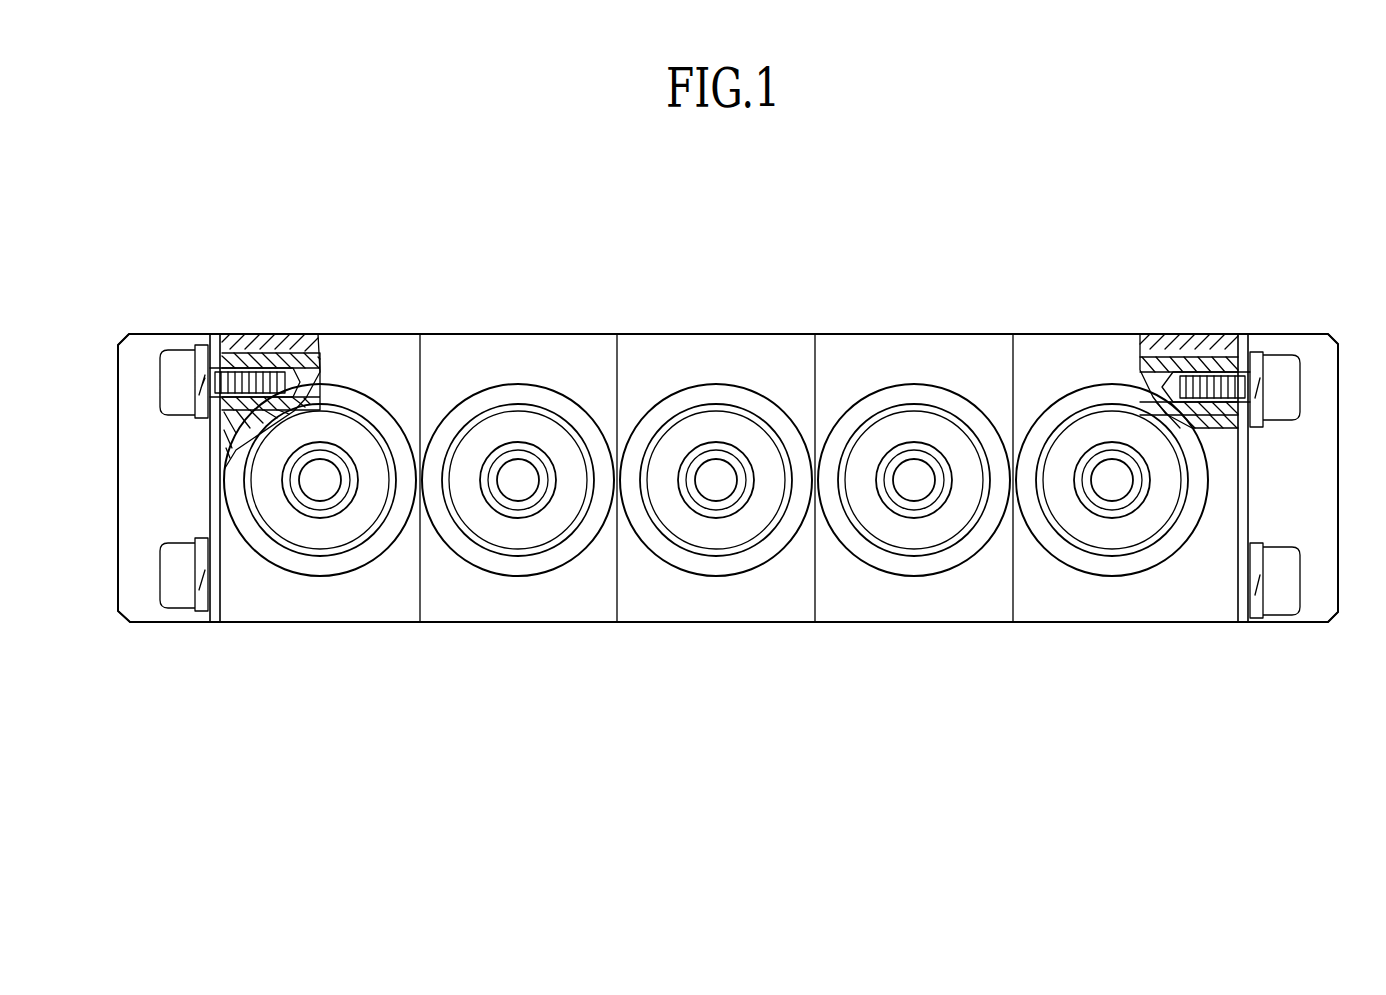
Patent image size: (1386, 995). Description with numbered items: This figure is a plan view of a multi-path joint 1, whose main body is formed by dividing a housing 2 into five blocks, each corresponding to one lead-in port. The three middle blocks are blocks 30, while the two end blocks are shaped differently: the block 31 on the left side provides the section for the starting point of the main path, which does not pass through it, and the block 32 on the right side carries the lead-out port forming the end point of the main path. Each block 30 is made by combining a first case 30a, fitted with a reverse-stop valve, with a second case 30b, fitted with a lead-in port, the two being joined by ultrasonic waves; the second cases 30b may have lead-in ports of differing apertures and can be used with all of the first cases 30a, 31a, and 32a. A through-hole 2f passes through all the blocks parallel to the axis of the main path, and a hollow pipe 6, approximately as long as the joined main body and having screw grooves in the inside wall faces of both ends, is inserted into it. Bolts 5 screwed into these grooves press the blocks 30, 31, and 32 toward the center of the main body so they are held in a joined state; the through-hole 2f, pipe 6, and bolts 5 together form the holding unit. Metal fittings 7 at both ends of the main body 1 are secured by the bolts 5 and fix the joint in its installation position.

The multi-path joint 1 is at (805, 271).
The housing 2 is at (1112, 336).
The through-hole 2f is at (1226, 352).
The bolts 5 is at (173, 360).
The hollow pipe 6 is at (243, 351).
The metal fittings 7 is at (128, 524).
The block 30 is at (716, 491).
The first case 30a is at (492, 352).
The second case 30b is at (348, 578).
The block 31 is at (321, 499).
The first case 31a is at (333, 352).
The block 32 is at (1125, 491).
The first case 32a is at (1055, 352).